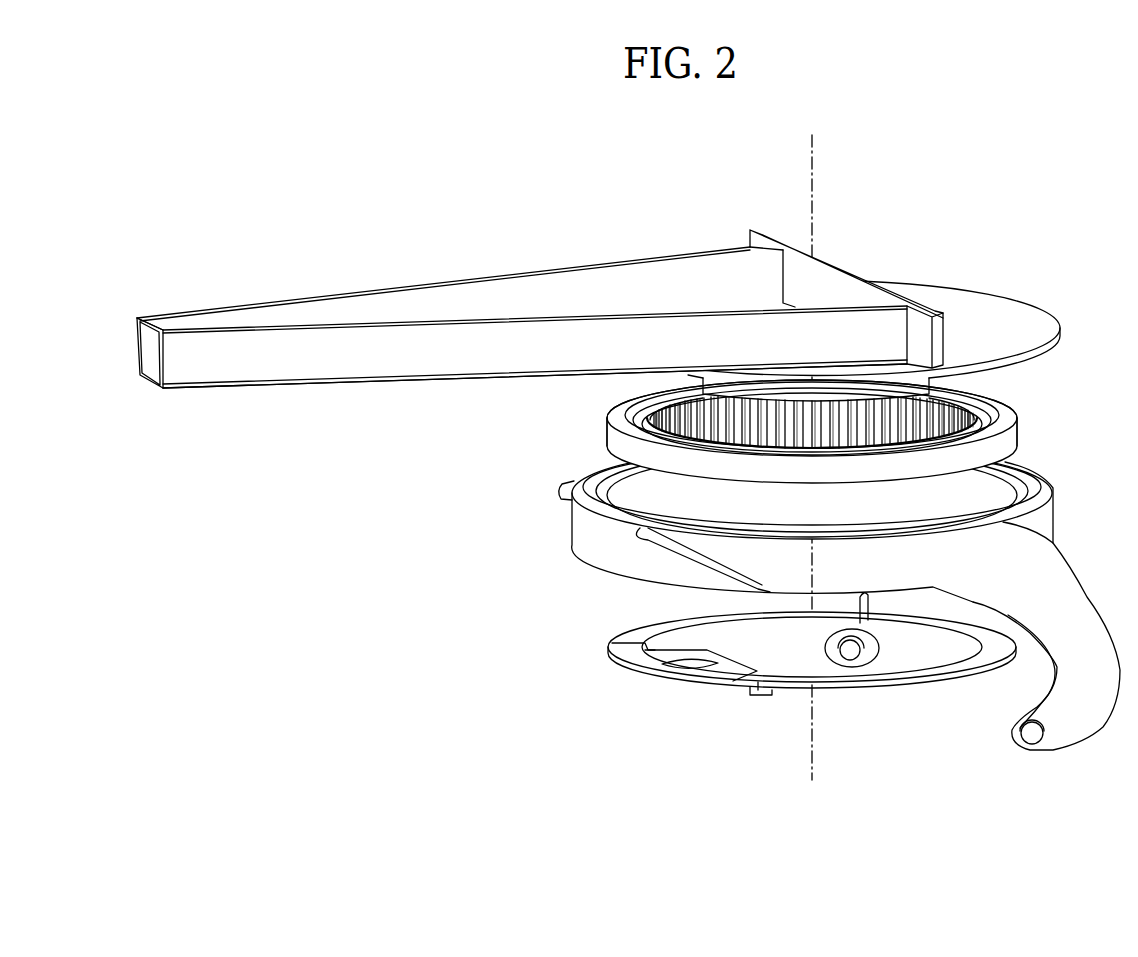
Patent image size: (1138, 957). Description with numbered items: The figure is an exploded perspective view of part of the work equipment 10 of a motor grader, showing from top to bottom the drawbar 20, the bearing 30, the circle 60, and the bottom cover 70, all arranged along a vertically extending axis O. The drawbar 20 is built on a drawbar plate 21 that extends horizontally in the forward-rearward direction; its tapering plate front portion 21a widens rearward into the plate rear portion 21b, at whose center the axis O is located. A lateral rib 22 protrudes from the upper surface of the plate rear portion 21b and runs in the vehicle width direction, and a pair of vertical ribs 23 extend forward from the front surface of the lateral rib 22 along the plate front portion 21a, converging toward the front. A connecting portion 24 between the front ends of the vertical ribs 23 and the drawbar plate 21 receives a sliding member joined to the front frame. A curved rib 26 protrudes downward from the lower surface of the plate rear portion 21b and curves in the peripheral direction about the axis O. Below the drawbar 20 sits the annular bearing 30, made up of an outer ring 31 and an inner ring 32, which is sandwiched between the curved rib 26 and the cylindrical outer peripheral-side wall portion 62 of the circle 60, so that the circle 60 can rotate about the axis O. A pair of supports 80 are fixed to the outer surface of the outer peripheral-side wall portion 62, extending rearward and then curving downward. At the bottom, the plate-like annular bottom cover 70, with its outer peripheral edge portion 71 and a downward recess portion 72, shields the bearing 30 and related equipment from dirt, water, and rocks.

The work equipment 10 is at (222, 200).
The drawbar 20 is at (599, 322).
The drawbar plate 21 is at (504, 344).
The plate front portion 21a is at (213, 388).
The plate rear portion 21b is at (1020, 312).
The lateral rib 22 is at (847, 272).
The vertical rib 23 is at (437, 275).
The connecting portion 24 is at (148, 352).
The curved rib 26 is at (862, 377).
The bearing 30 is at (872, 431).
The outer ring 31 is at (1000, 445).
The inner ring 32 is at (960, 416).
The circle 60 is at (795, 598).
The outer peripheral-side wall portion 62 is at (563, 525).
The bottom cover 70 is at (809, 680).
The outer peripheral edge portion 71 is at (643, 668).
The recess portion 72 is at (708, 658).
The support 80 is at (896, 636).
The axis O is at (812, 158).